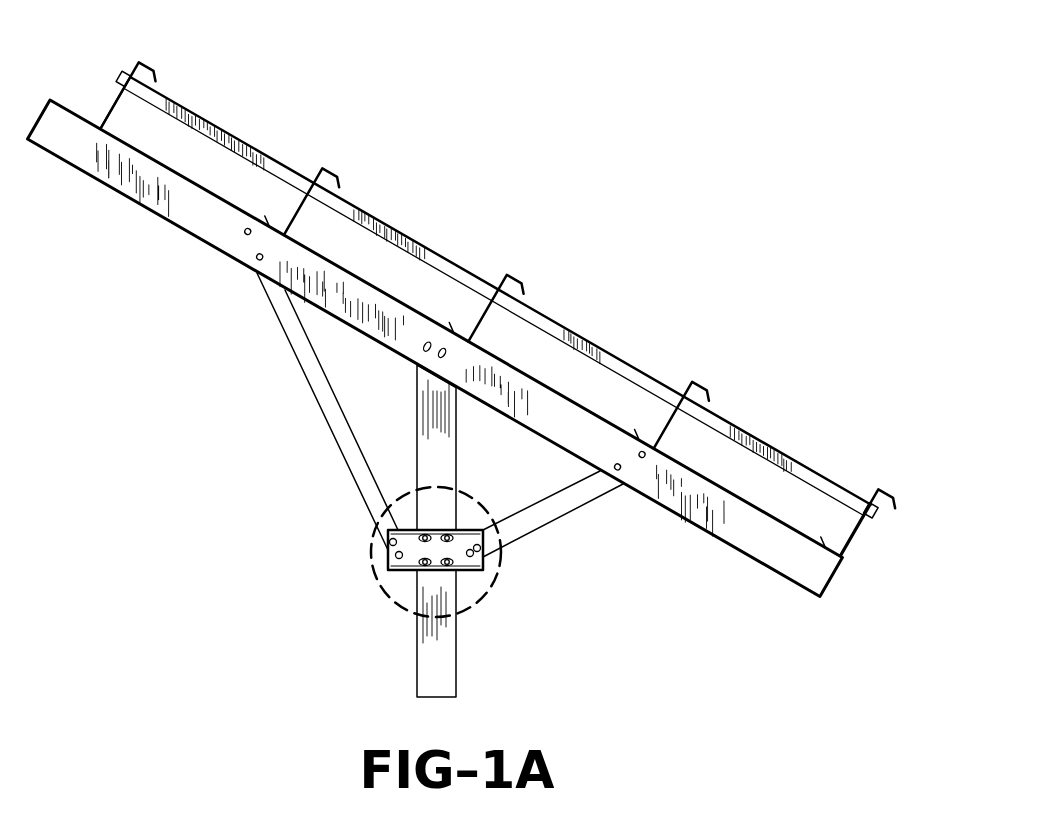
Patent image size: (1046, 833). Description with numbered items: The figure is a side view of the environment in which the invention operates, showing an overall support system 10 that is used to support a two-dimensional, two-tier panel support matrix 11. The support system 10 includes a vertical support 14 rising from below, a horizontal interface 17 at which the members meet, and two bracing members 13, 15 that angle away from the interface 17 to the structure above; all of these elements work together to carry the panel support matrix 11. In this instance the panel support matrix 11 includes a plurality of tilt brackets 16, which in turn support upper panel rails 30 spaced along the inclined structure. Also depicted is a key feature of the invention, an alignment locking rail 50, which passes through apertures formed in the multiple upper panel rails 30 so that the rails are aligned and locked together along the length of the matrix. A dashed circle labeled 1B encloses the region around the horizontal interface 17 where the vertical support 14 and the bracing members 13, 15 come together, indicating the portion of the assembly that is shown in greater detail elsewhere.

The support system 10 is at (718, 207).
The panel support matrix 11 is at (480, 323).
The bracing member 13 is at (328, 400).
The vertical support 14 is at (433, 652).
The bracing member 15 is at (535, 517).
The tilt bracket 16 is at (215, 227).
The horizontal interface 17 is at (405, 567).
The upper panel rail 30 is at (110, 110).
The alignment locking rail 50 is at (580, 337).
The detail circle for FIG. 1B is at (493, 585).